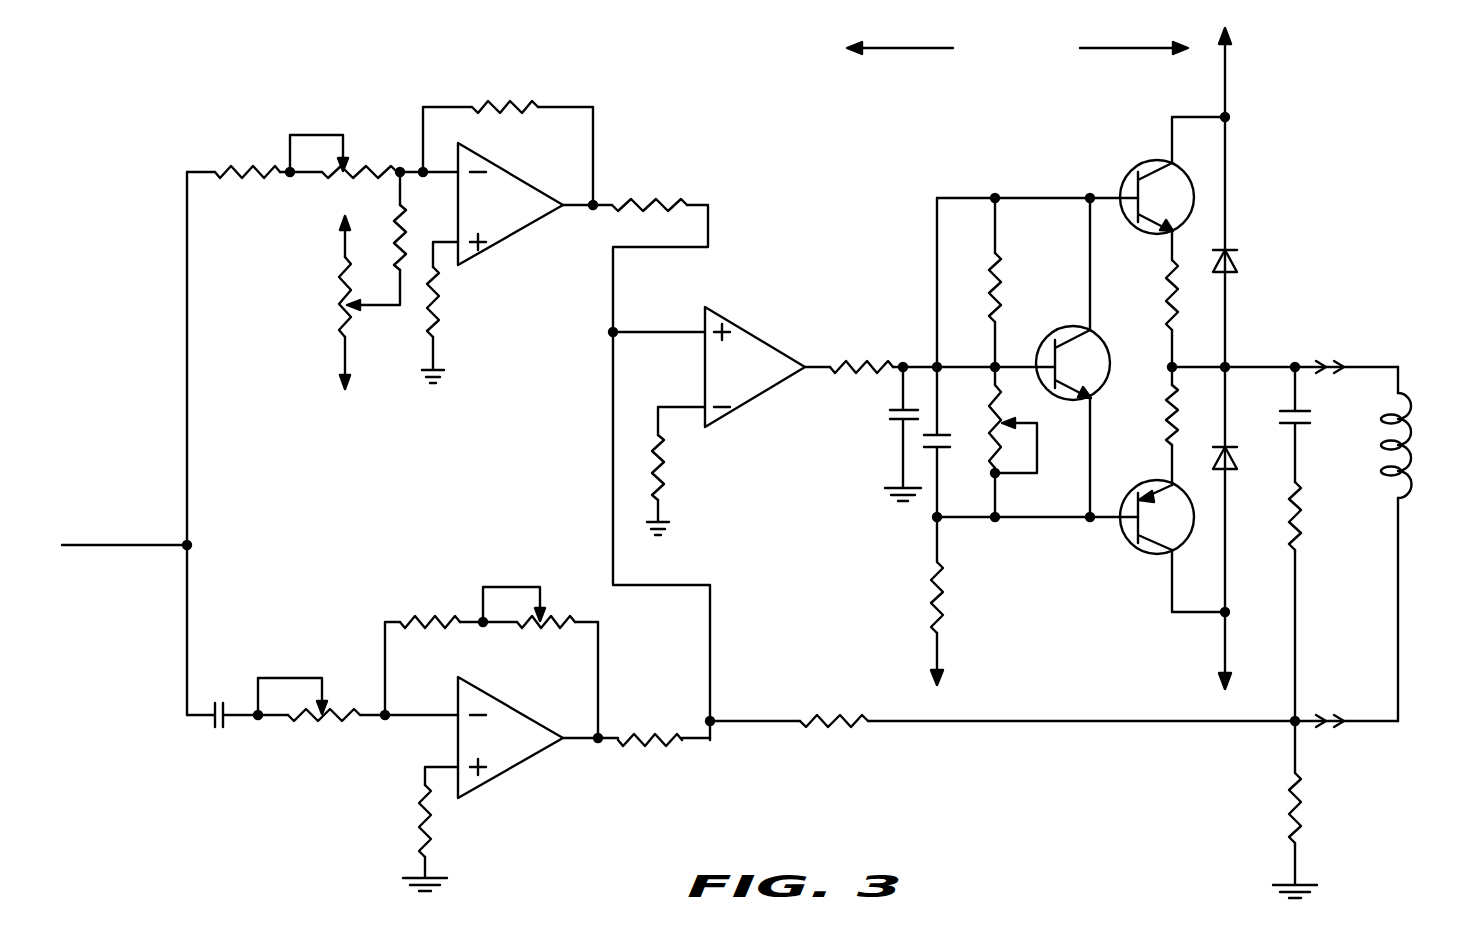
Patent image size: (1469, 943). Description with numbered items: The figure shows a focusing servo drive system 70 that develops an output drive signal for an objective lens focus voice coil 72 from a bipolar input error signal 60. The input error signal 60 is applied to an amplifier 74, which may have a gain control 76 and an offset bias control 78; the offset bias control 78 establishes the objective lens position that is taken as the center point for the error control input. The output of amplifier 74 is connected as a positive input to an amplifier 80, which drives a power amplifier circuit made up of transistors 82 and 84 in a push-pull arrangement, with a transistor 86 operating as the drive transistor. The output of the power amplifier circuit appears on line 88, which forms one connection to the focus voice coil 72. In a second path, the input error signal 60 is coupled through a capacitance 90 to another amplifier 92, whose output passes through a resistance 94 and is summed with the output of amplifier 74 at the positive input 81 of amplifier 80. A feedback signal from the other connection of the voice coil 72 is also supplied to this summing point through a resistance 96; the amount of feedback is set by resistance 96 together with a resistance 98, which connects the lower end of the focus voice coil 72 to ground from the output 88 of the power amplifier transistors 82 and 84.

The input error signal 60 is at (173, 542).
The system 70 is at (779, 198).
The objective lens focus voice coil 72 is at (1393, 448).
The amplifier 74 is at (523, 228).
The gain control 76 is at (333, 181).
The offset bias control 78 is at (337, 315).
The amplifier 80 is at (773, 343).
The positive input 81 is at (645, 327).
The transistor 82 is at (1138, 165).
The transistor 84 is at (1137, 550).
The transistor 86 is at (1110, 347).
The line 88 is at (1267, 352).
The capacitance 90 is at (216, 729).
The amplifier 92 is at (517, 767).
The resistance 94 is at (653, 748).
The resistance 96 is at (833, 730).
The resistance 98 is at (1297, 821).